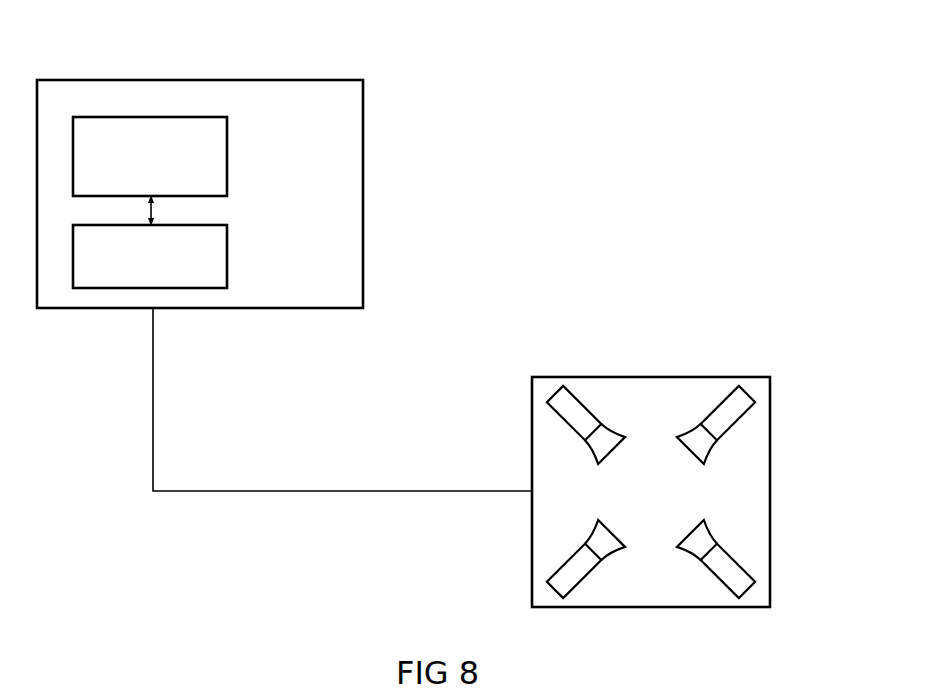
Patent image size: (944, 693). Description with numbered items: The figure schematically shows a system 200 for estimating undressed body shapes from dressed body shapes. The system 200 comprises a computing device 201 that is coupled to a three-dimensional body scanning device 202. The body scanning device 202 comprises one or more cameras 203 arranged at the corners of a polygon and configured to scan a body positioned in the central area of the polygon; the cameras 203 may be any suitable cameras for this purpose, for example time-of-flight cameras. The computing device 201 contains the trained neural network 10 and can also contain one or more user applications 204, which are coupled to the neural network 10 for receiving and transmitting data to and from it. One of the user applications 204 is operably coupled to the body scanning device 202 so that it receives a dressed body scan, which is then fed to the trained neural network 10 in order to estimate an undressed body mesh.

The trained neural network 10 is at (152, 117).
The system 200 is at (532, 179).
The computing device 201 is at (363, 141).
The three-dimensional body scanning device 202 is at (653, 377).
The cameras 203 is at (732, 432).
The user applications 204 is at (200, 288).